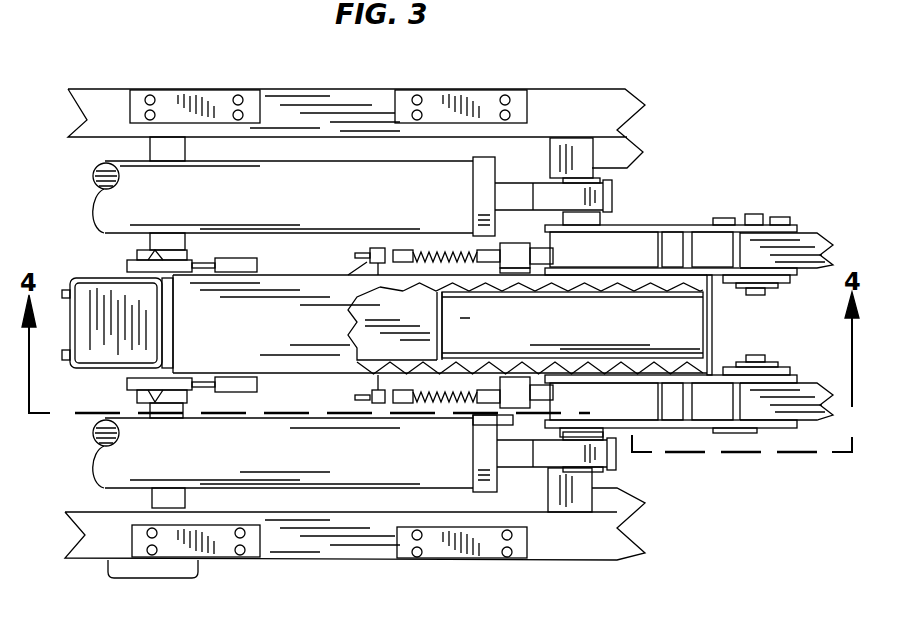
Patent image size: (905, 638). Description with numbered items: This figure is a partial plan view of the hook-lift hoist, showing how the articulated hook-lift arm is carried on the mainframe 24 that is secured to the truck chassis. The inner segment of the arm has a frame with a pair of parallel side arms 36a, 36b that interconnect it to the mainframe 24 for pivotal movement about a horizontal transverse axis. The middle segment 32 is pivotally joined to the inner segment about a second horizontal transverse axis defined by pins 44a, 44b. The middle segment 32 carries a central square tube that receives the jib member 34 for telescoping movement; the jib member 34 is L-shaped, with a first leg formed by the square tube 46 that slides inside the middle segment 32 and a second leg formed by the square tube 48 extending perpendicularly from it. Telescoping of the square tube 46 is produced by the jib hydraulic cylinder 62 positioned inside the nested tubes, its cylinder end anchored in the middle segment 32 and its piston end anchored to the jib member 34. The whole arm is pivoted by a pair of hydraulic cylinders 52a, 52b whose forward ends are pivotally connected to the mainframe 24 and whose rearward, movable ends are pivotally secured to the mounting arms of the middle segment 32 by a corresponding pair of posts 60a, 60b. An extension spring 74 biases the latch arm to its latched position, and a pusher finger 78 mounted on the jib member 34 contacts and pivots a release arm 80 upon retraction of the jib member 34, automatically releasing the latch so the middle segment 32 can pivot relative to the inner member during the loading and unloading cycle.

The mainframe 24 is at (343, 552).
The middle segment 32 is at (638, 214).
The jib member 34 is at (281, 262).
The side arm 36a is at (808, 425).
The side arm 36b is at (807, 237).
The pin 44a is at (757, 353).
The pin 44b is at (757, 296).
The square tube 46 is at (287, 368).
The square tube 48 is at (88, 290).
The hydraulic cylinder 52a is at (267, 455).
The hydraulic cylinder 52b is at (265, 192).
The post 60a is at (578, 470).
The post 60b is at (577, 173).
The jib hydraulic cylinder 62 is at (600, 326).
The extension spring 74 is at (443, 405).
The pusher finger 78 is at (178, 377).
The release arm 80 is at (241, 378).